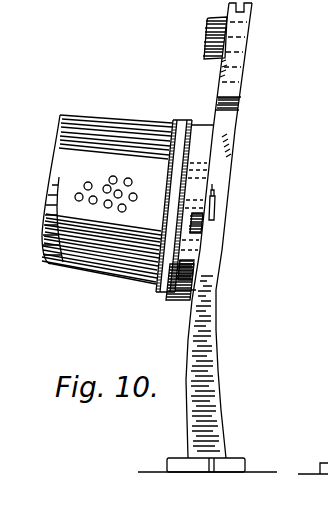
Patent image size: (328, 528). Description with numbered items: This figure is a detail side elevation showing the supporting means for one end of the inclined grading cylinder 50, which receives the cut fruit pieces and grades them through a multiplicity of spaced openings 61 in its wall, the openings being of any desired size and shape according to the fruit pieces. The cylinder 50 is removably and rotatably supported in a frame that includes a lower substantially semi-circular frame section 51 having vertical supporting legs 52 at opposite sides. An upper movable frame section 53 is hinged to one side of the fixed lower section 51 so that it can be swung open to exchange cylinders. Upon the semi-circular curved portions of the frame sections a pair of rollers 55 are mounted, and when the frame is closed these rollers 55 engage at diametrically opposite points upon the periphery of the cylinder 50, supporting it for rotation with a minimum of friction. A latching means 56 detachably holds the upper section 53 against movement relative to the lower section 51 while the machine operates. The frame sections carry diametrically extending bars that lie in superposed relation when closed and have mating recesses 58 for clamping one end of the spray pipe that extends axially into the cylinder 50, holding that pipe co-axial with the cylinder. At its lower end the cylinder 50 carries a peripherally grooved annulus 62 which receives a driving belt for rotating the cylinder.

The grading cylinder 50 is at (107, 199).
The lower frame section 51 is at (219, 244).
The supporting legs 52 is at (215, 360).
The upper movable frame section 53 is at (245, 73).
The rollers 55 is at (206, 54).
The latching means 56 is at (220, 206).
The mating recesses 58 is at (236, 115).
The spaced openings 61 is at (141, 192).
The peripherally grooved annulus 62 is at (183, 168).